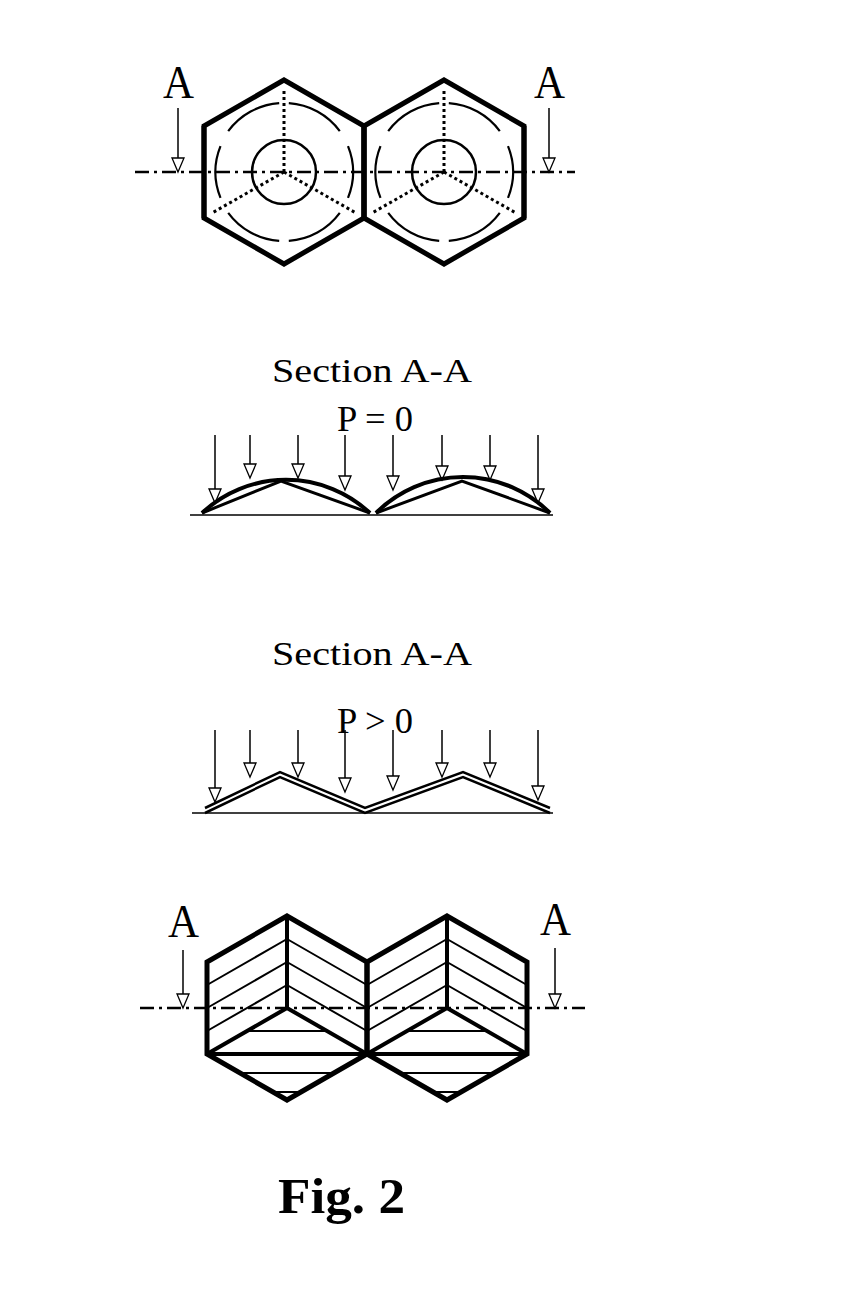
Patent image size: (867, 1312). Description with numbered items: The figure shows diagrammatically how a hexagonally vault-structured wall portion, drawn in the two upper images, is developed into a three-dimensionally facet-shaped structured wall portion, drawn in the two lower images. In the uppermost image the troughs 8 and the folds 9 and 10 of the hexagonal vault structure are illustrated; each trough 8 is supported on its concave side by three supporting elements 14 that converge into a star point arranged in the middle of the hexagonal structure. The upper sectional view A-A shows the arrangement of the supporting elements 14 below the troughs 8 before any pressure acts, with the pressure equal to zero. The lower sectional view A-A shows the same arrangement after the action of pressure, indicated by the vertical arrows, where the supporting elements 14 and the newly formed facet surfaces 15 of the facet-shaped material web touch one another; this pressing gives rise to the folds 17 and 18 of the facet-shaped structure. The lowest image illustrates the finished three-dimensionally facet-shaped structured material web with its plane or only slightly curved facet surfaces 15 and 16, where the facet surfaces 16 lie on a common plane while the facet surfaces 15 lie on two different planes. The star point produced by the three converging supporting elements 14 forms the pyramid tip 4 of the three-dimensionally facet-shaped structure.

The pyramid tip 4 is at (367, 939).
The troughs 8 is at (412, 256).
The folds 9 is at (353, 190).
The folds 10 is at (364, 233).
The supporting elements 14 is at (362, 483).
The facet surfaces 15 is at (392, 848).
The facet surfaces 16 is at (367, 1096).
The folds 17 is at (332, 936).
The folds 18 is at (368, 1082).